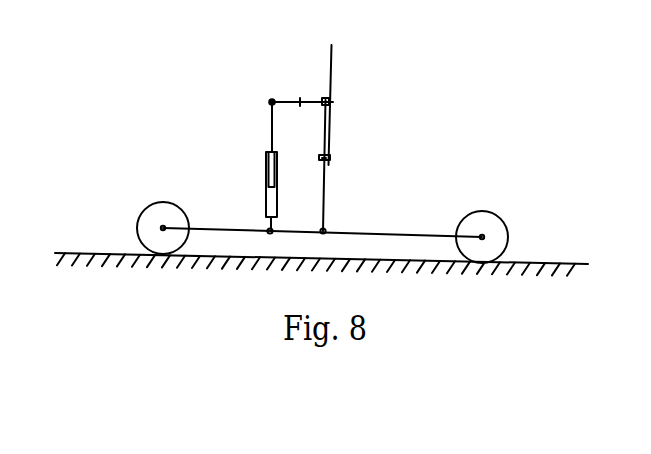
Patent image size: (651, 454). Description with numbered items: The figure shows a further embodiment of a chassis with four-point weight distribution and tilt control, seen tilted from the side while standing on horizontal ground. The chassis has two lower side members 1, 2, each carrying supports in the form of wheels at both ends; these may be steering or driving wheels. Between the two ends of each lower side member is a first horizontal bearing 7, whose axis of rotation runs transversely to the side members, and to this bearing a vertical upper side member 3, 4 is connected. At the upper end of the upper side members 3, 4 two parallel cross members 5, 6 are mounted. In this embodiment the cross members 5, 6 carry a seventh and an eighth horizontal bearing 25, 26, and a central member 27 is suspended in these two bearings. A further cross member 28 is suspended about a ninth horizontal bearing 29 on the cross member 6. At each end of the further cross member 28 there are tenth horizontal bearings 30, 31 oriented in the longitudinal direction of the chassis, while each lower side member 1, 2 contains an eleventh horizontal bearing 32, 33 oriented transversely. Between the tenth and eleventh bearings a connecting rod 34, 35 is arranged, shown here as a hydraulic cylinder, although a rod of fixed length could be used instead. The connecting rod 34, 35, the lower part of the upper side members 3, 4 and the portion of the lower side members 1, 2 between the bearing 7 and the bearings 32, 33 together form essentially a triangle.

The lower side member 1 is at (345, 214).
The lower side member 2 is at (408, 231).
The upper side member 3 is at (296, 299).
The upper side member 4 is at (322, 200).
The cross member 5 is at (321, 158).
The cross member 6 is at (325, 101).
The first horizontal bearing 7 is at (325, 228).
The seventh horizontal bearing 25 is at (328, 165).
The eighth horizontal bearing 26 is at (333, 107).
The central member 27 is at (333, 77).
The further cross member 28 is at (283, 102).
The ninth horizontal bearing 29 is at (303, 108).
The tenth horizontal bearing 30 is at (169, 65).
The tenth horizontal bearing 31 is at (272, 102).
The eleventh horizontal bearing 32 is at (185, 280).
The eleventh horizontal bearing 33 is at (268, 233).
The connecting rod 34 is at (198, 165).
The connecting rod 35 is at (265, 168).